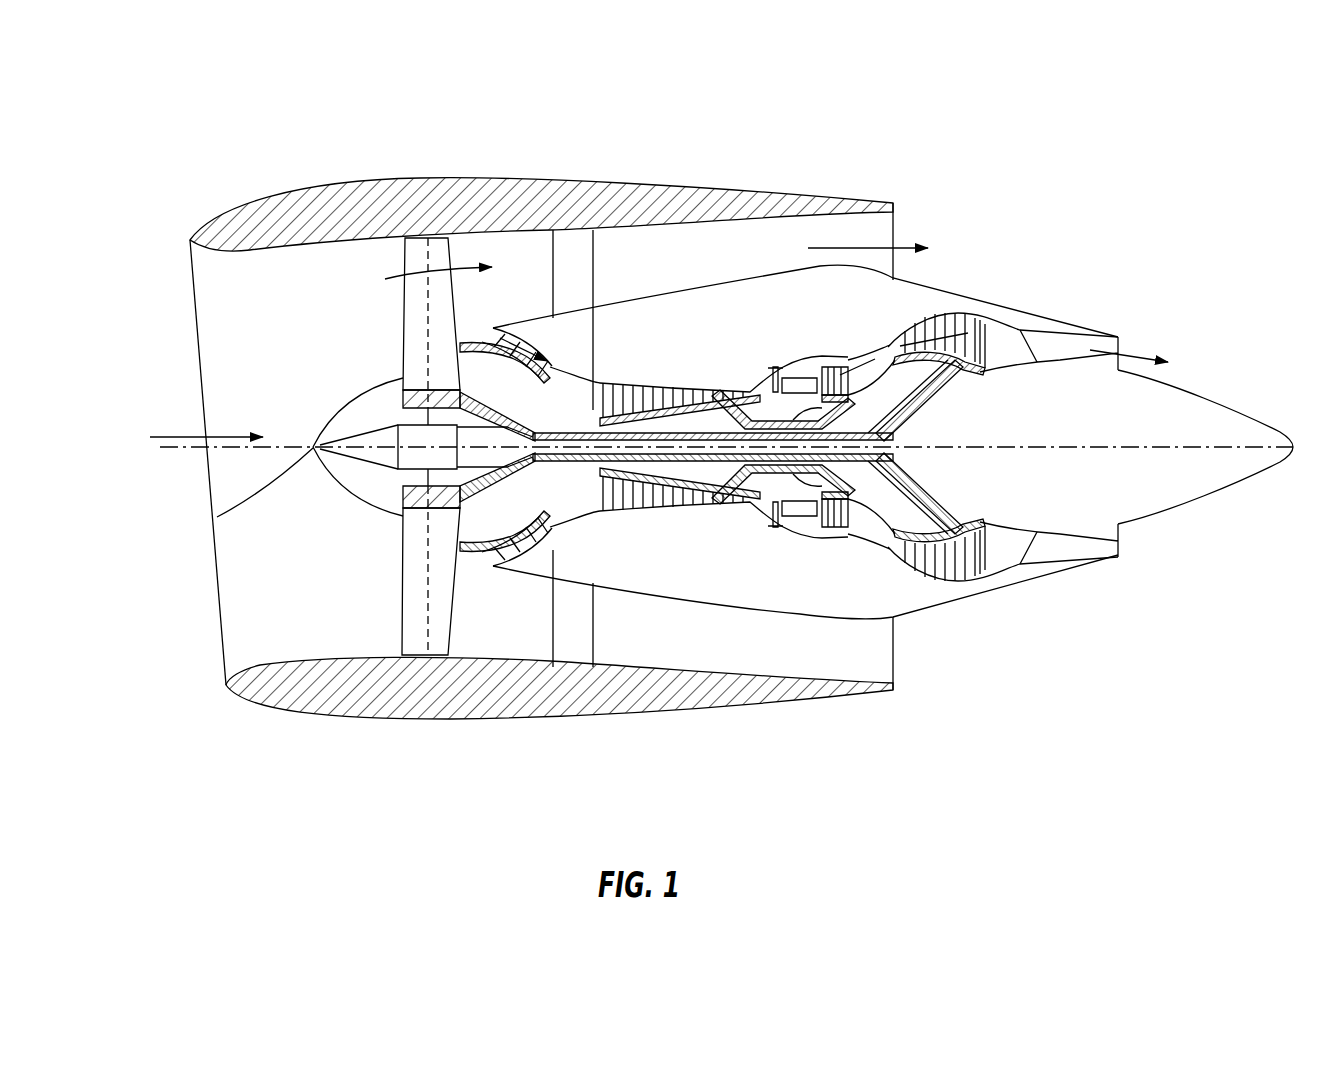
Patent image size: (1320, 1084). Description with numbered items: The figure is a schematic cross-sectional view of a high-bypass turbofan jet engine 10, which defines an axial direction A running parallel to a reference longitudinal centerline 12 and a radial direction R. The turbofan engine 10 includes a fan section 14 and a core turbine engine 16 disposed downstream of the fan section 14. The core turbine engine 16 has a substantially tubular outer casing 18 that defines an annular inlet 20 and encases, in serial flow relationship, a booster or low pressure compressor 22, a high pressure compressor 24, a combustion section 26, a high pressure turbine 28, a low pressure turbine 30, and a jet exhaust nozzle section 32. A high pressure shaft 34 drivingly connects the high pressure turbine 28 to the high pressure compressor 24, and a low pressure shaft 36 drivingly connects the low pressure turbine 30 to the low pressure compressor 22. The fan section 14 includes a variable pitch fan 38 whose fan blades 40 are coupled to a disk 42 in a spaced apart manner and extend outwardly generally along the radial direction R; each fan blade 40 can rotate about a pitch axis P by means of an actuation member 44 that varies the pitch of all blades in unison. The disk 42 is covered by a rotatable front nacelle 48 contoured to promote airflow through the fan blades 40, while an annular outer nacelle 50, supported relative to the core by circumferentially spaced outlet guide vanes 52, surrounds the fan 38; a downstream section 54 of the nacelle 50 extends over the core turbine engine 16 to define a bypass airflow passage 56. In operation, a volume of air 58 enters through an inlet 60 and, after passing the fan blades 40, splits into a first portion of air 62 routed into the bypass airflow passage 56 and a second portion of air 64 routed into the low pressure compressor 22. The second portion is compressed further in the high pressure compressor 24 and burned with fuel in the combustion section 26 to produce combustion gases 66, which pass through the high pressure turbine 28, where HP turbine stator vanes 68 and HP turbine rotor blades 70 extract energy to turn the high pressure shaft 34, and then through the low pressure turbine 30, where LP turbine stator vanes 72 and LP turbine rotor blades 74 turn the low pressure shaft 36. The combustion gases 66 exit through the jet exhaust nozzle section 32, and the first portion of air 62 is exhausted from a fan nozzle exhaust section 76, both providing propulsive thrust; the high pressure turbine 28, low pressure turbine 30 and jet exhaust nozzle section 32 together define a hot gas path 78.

The turbofan jet engine 10 is at (1038, 188).
The longitudinal centerline 12 is at (1062, 447).
The fan section 14 is at (362, 265).
The core turbine engine 16 is at (711, 330).
The outer casing 18 is at (750, 603).
The annular inlet 20 is at (497, 555).
The low pressure compressor 22 is at (560, 526).
The high pressure compressor 24 is at (632, 508).
The combustion section 26 is at (792, 514).
The high pressure turbine 28 is at (913, 512).
The low pressure turbine 30 is at (978, 582).
The jet exhaust nozzle section 32 is at (1123, 338).
The high pressure shaft 34 is at (833, 400).
The low pressure shaft 36 is at (575, 410).
The variable pitch fan 38 is at (372, 347).
The fan blades 40 is at (402, 592).
The disk 42 is at (412, 398).
The actuation member 44 is at (398, 432).
The front nacelle 48 is at (217, 517).
The outer nacelle 50 is at (452, 721).
The outlet guide vanes 52 is at (595, 255).
The downstream section of nacelle 54 is at (838, 202).
The bypass airflow passage 56 is at (766, 265).
The volume of air 58 is at (197, 437).
The inlet 60 is at (221, 660).
The first portion of air 62 is at (418, 263).
The second portion of air 64 is at (484, 332).
The combustion gases 66 is at (934, 328).
The HP turbine stator vanes 68 is at (810, 524).
The HP turbine rotor blades 70 is at (880, 488).
The LP turbine stator vanes 72 is at (900, 553).
The LP turbine rotor blades 74 is at (912, 568).
The fan nozzle exhaust section 76 is at (885, 238).
The hot gas path 78 is at (879, 349).
The pitch axis P is at (485, 228).
The radial direction R is at (112, 312).
The axial direction A is at (785, 801).